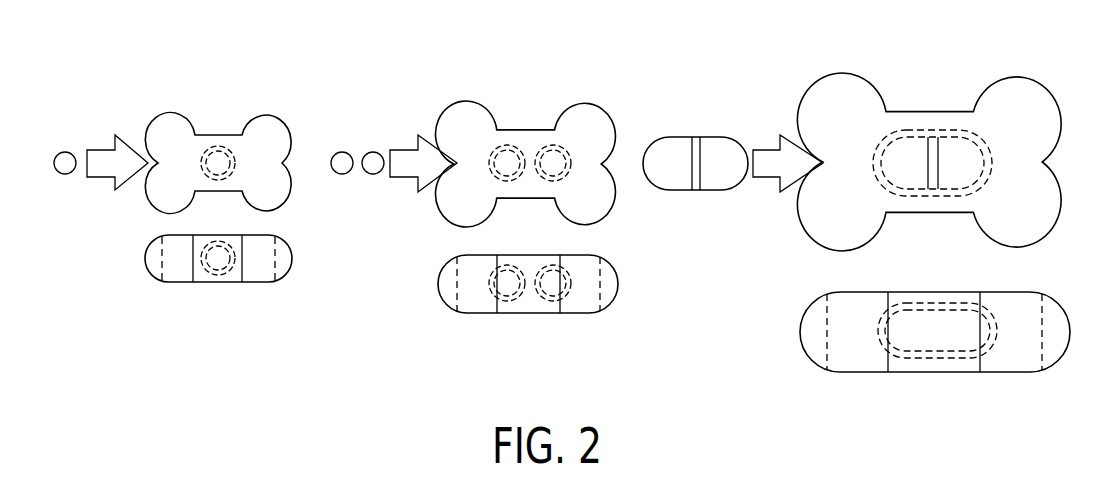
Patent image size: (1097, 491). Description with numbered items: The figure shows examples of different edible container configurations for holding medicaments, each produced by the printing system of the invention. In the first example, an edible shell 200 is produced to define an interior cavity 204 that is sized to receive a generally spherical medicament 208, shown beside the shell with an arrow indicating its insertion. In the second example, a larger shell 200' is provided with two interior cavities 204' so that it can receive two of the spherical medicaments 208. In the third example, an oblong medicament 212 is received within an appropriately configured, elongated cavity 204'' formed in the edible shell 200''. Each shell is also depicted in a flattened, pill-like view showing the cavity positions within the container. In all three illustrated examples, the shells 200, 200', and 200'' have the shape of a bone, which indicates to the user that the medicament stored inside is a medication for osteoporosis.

The edible shell 200 is at (218, 167).
The interior cavity 204 is at (226, 177).
The spherical medicament 208 is at (65, 156).
The edible shell 200' is at (514, 172).
The interior cavities 204' is at (530, 188).
The oblong medicament 212 is at (678, 152).
The edible shell 200'' is at (931, 190).
The cavity 204'' is at (935, 209).